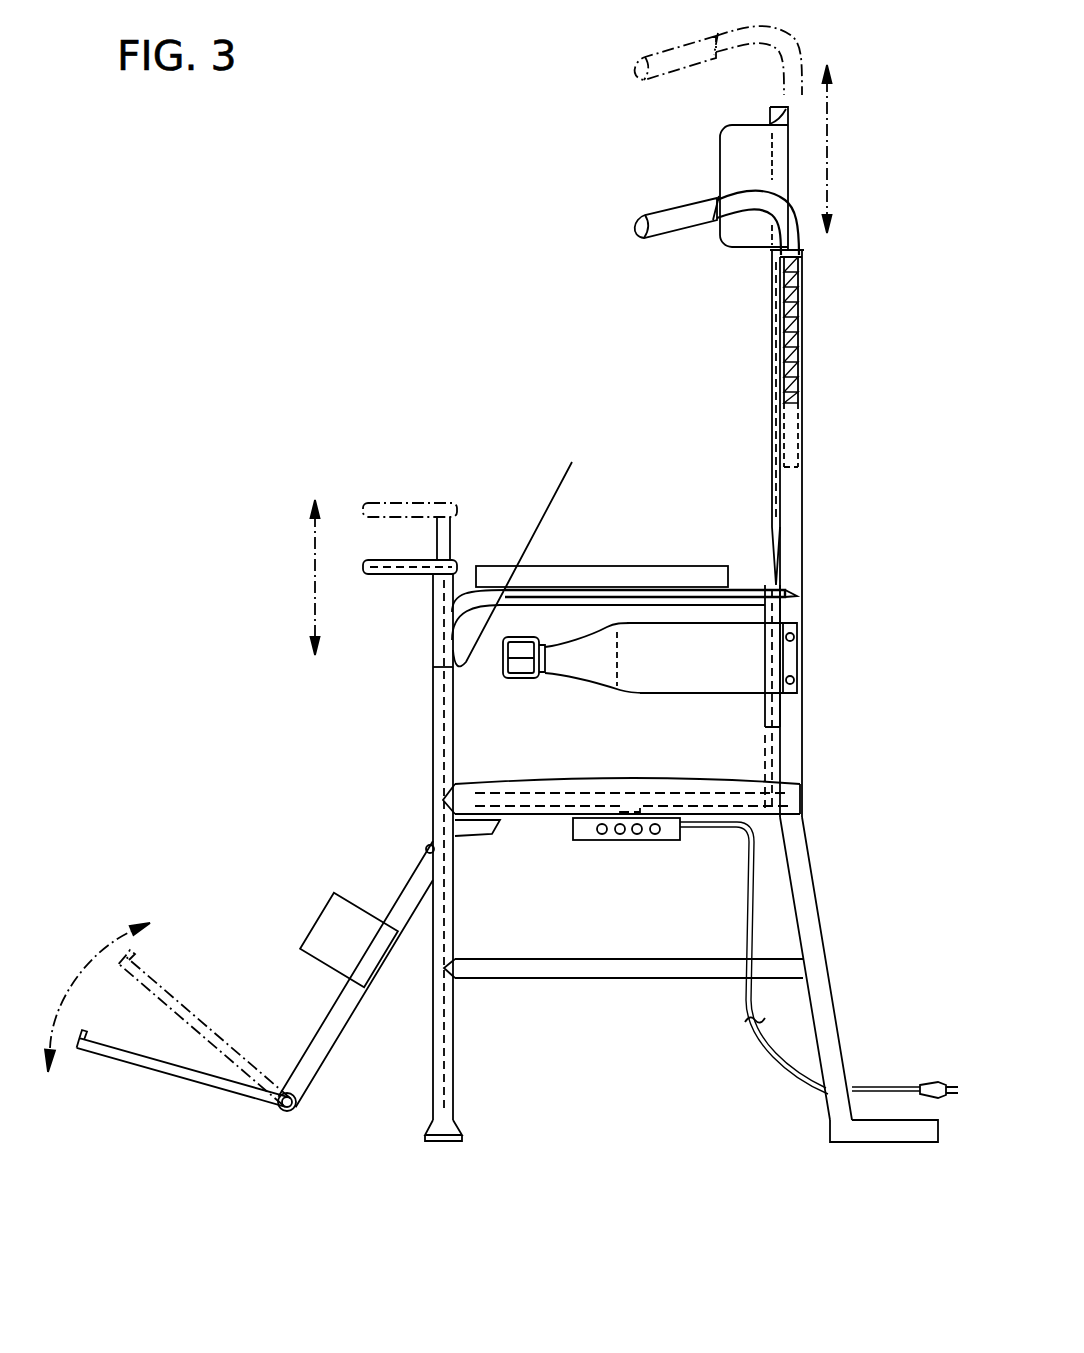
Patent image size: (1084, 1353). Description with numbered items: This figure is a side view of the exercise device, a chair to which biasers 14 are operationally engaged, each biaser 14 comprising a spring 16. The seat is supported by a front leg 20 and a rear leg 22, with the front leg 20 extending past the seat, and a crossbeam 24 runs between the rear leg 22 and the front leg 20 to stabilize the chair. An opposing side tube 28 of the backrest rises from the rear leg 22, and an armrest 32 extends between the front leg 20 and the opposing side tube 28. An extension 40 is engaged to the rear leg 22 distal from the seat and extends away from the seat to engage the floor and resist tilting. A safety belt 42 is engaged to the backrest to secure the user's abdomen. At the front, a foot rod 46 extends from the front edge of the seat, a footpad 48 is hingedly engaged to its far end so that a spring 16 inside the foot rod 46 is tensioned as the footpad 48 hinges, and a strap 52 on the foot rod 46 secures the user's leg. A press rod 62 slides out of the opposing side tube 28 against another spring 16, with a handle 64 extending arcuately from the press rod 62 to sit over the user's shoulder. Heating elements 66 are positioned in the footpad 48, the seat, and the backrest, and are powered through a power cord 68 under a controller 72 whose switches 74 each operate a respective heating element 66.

The biaser 14 is at (421, 586).
The spring 16 is at (815, 310).
The front leg 20 is at (419, 746).
The rear leg 22 is at (840, 928).
The crossbeam 24 is at (600, 988).
The opposing side tube 28 is at (824, 480).
The armrest 32 is at (651, 573).
The extension 40 is at (890, 1155).
The safety belt 42 is at (756, 650).
The foot rod 46 is at (351, 1024).
The footpad 48 is at (128, 1082).
The strap 52 is at (320, 924).
The press rod 62 is at (822, 246).
The handle 64 is at (672, 212).
The heating element 66 is at (626, 776).
The power cord 68 is at (794, 1084).
The controller 72 is at (800, 782).
The switch 74 is at (640, 857).